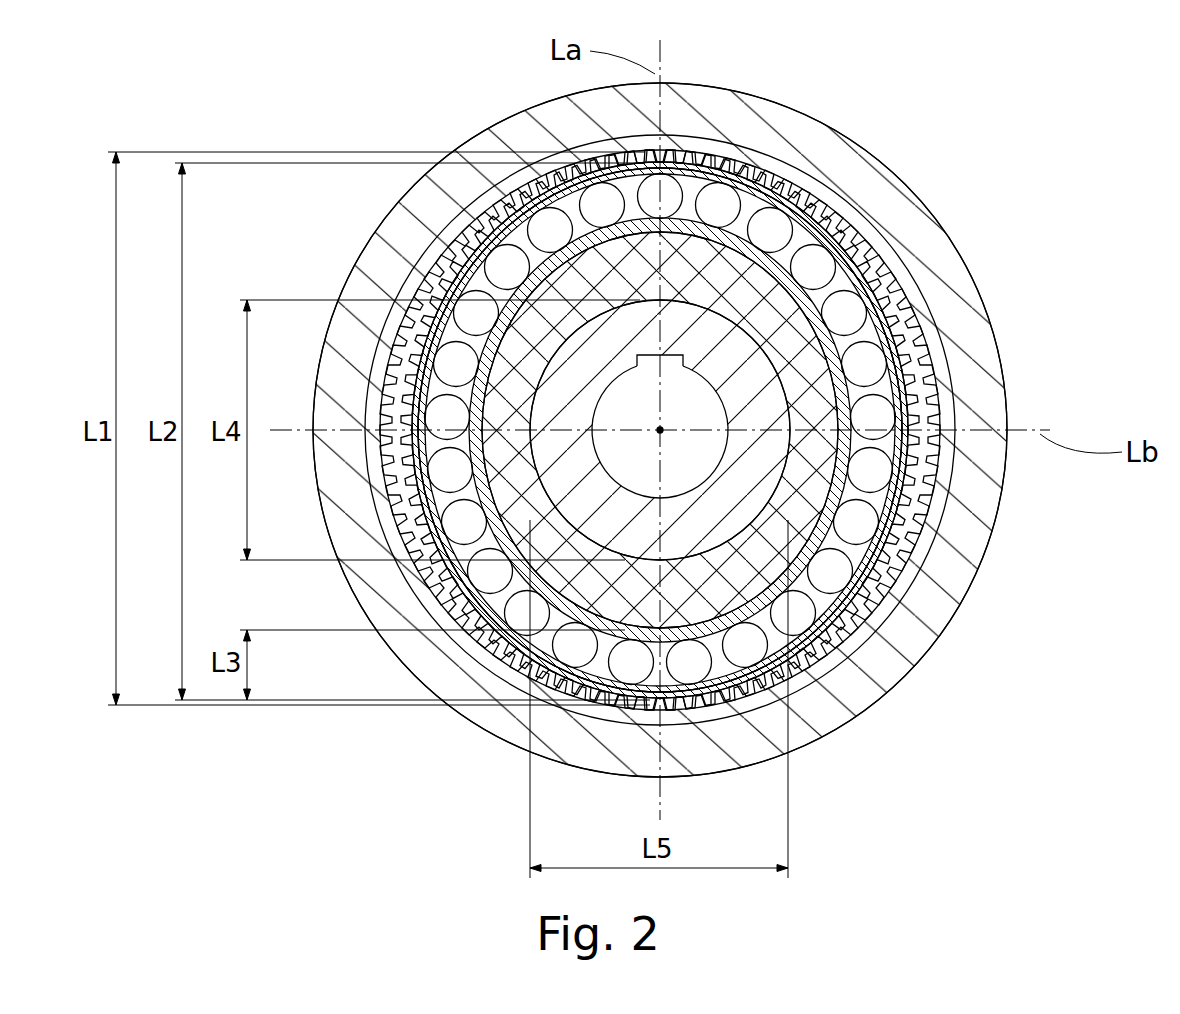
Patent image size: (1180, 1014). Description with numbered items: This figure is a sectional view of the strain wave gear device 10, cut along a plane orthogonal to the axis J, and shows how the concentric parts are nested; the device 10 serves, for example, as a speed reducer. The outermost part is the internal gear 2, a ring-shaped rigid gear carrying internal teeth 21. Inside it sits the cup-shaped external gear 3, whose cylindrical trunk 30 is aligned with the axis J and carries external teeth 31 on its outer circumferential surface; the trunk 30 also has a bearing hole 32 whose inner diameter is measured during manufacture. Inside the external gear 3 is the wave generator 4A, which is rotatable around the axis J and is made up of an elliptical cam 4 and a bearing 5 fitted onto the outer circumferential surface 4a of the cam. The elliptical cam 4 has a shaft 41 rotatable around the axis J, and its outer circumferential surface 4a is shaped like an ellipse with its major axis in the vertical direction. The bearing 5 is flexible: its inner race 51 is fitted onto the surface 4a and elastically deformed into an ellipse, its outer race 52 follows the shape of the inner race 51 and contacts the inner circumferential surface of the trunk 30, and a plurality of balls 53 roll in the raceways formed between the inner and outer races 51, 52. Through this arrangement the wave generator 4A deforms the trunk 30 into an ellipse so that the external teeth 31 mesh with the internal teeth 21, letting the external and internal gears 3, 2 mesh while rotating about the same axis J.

The strain wave gear device 10 is at (925, 146).
The internal gear 2 is at (946, 217).
The internal teeth 21 is at (930, 477).
The external gear 3 is at (921, 457).
The trunk 30 is at (953, 462).
The external teeth 31 is at (912, 515).
The bearing hole 32 is at (905, 545).
The elliptical cam 4 is at (824, 327).
The wave generator 4A is at (909, 347).
The shaft 41 is at (757, 417).
The outer circumferential surface 4a is at (663, 428).
The bearing 5 is at (695, 506).
The inner race 51 is at (815, 570).
The outer race 52 is at (897, 515).
The balls 53 is at (858, 545).
The axis J is at (775, 200).